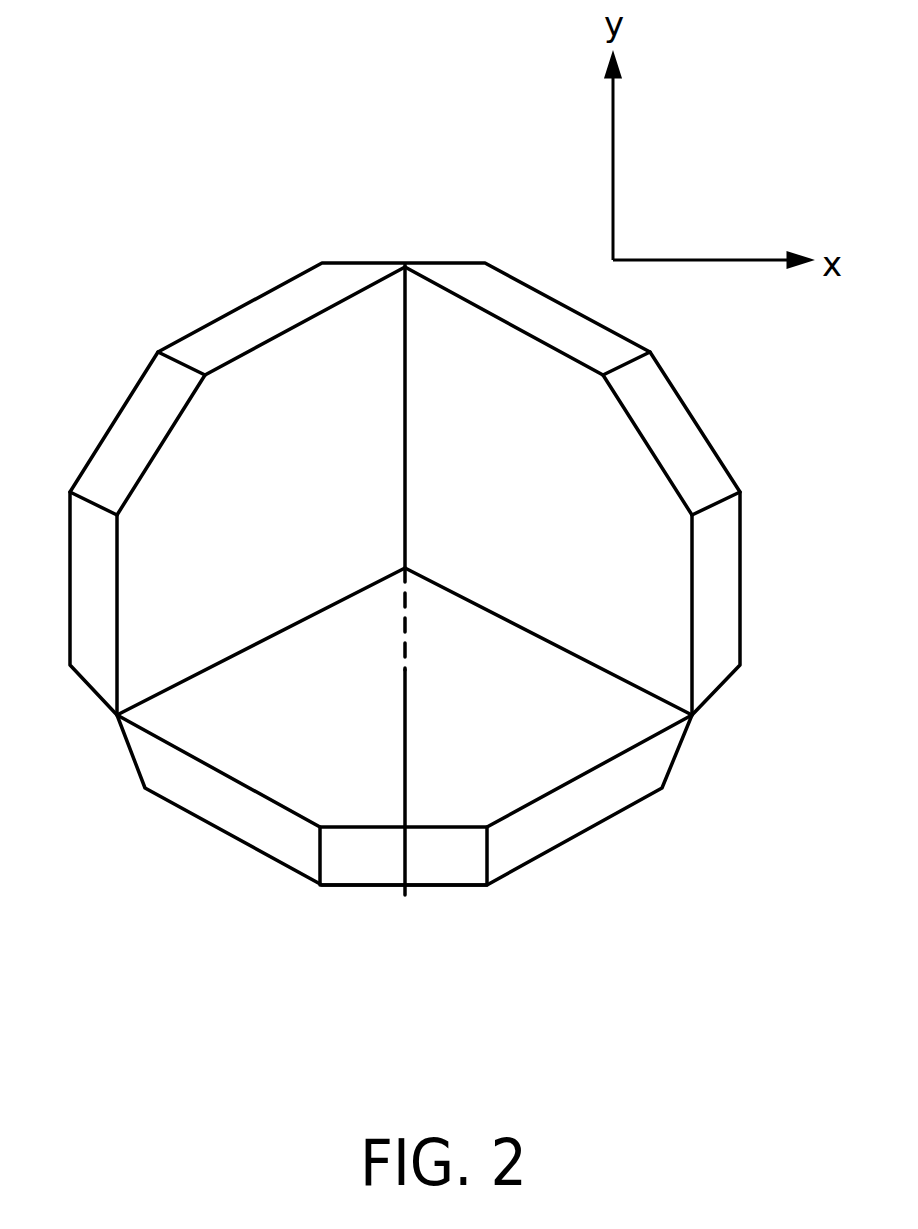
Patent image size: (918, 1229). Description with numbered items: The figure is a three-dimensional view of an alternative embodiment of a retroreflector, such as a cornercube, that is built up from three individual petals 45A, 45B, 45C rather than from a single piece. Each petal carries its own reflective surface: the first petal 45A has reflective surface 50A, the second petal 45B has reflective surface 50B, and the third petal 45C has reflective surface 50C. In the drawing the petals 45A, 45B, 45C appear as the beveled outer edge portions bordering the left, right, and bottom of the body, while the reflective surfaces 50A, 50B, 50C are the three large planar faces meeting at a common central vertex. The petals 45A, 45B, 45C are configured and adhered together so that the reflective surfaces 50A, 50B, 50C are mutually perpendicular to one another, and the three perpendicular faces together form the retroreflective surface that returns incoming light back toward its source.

The petal 45A is at (118, 447).
The petal 45B is at (708, 572).
The petal 45C is at (448, 870).
The reflective surface 50A is at (285, 492).
The reflective surface 50B is at (538, 492).
The reflective surface 50C is at (527, 742).